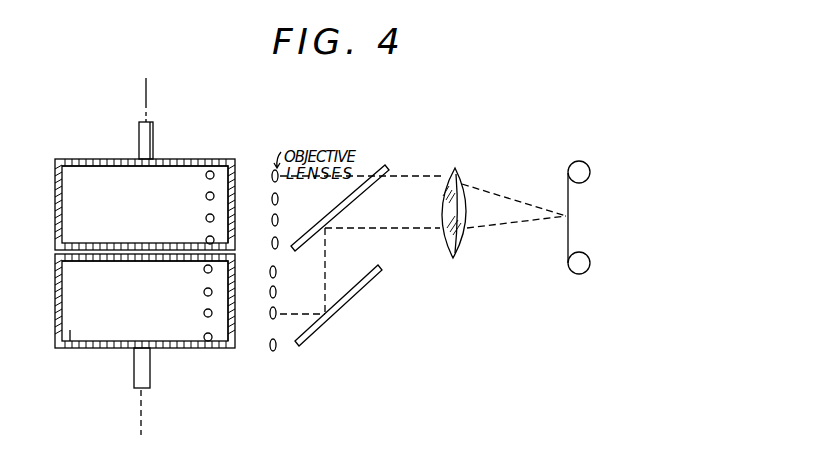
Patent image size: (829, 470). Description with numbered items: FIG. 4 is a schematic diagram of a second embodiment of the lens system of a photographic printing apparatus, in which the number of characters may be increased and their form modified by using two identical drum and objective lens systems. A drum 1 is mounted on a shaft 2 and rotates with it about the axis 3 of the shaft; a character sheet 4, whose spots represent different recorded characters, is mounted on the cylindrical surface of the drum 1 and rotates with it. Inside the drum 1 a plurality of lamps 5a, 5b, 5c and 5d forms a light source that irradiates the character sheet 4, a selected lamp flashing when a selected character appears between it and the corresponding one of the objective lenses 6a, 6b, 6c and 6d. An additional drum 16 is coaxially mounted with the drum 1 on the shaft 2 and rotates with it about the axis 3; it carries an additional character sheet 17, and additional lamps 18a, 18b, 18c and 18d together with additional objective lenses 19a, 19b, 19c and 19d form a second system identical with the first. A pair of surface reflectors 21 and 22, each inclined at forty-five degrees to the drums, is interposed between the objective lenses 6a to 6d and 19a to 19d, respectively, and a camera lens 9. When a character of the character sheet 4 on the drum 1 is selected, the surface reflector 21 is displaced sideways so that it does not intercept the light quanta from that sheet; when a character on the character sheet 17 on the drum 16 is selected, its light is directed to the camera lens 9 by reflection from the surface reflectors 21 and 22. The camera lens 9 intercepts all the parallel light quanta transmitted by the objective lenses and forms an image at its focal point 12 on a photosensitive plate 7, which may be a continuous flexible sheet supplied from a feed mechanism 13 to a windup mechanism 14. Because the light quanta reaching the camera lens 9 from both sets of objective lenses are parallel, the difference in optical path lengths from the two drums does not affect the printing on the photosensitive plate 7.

The drum 1 is at (72, 172).
The shaft 2 is at (139, 133).
The axis 3 is at (145, 90).
The character sheet 4 is at (271, 150).
The lamp 5a is at (205, 176).
The lamp 5b is at (205, 197).
The lamp 5c is at (205, 219).
The lamp 5d is at (205, 240).
The objective lens 6a is at (274, 182).
The objective lens 6b is at (274, 204).
The objective lens 6c is at (274, 225).
The objective lens 6d is at (272, 246).
The photosensitive plate 7 is at (567, 178).
The camera lens 9 is at (456, 248).
The focal point 12 is at (565, 218).
The feed mechanism 13 is at (590, 265).
The windup mechanism 14 is at (588, 180).
The additional drum 16 is at (67, 346).
The additional character sheet 17 is at (237, 343).
The additional lamp 18a is at (206, 272).
The additional lamp 18b is at (206, 295).
The additional lamp 18c is at (204, 314).
The additional lamp 18d is at (204, 337).
The additional objective lens 19a is at (272, 278).
The additional objective lens 19b is at (272, 297).
The additional objective lens 19c is at (272, 319).
The additional objective lens 19d is at (270, 344).
The surface reflector 21 is at (468, 138).
The surface reflector 22 is at (348, 302).